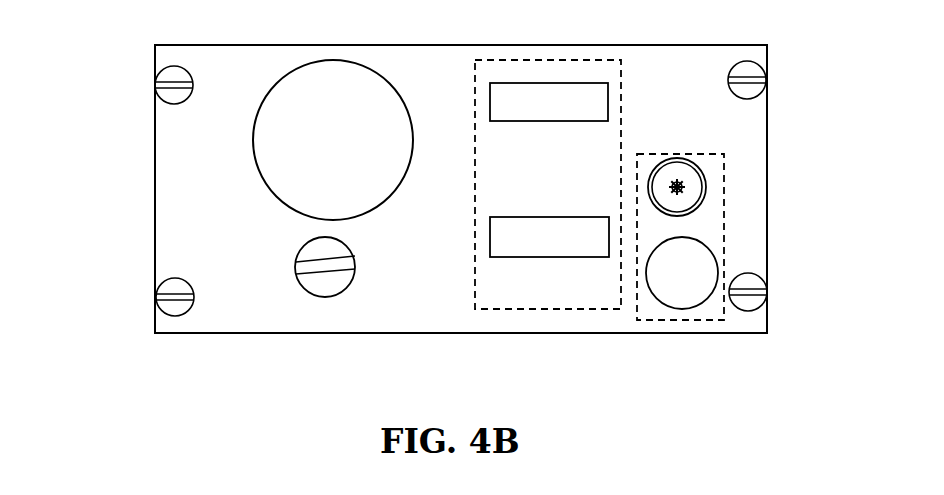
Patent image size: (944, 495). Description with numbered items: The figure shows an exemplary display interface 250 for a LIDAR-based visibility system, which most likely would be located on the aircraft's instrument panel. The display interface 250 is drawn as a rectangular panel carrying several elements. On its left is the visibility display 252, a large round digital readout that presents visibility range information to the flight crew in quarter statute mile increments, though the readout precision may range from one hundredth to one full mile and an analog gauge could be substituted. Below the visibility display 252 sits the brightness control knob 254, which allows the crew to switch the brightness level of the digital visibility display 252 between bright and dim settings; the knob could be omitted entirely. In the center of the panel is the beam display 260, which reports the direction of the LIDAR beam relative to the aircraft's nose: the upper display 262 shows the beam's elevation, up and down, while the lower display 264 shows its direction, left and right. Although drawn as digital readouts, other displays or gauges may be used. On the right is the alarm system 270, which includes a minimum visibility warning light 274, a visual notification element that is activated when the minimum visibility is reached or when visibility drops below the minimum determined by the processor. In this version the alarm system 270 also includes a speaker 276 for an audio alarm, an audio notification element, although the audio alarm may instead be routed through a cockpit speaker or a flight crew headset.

The display interface 250 is at (151, 158).
The visibility display 252 is at (258, 110).
The brightness control knob 254 is at (345, 287).
The beam display 260 is at (621, 95).
The elevation display 262 is at (488, 95).
The direction display 264 is at (490, 239).
The alarm system 270 is at (718, 154).
The minimum visibility warning light 274 is at (706, 190).
The speaker 276 is at (711, 250).